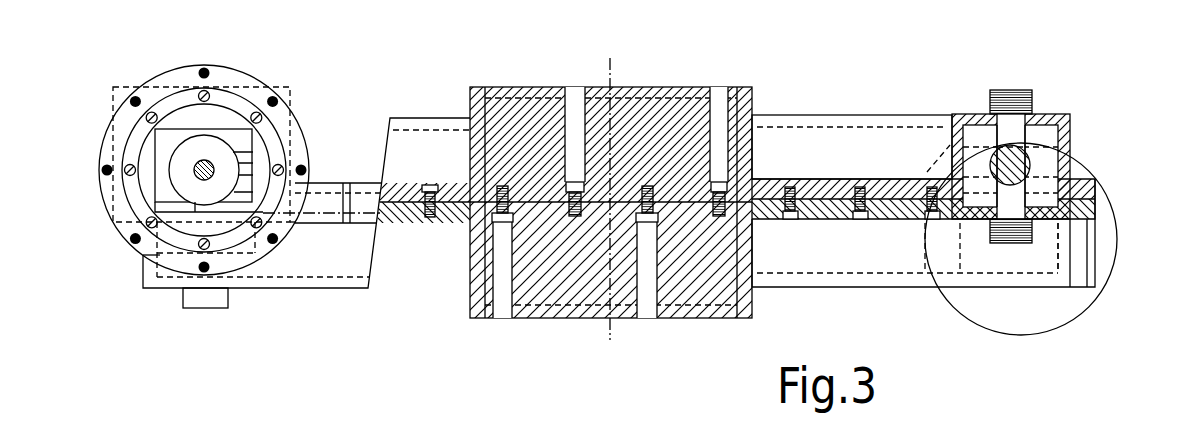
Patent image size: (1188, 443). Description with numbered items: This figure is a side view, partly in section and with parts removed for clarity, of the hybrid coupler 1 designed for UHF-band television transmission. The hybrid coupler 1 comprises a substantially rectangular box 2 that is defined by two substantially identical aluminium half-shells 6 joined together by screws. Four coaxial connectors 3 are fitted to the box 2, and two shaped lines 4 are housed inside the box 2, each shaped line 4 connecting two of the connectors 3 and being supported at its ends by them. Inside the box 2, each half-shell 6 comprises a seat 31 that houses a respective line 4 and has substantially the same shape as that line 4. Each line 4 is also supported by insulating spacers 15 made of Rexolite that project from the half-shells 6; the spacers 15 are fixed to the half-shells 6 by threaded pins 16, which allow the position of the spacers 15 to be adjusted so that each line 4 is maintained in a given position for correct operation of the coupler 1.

The hybrid coupler 1 is at (812, 42).
The box 2 is at (760, 100).
The connector 3 is at (293, 98).
The shaped line 4 is at (1032, 165).
The half-shell 6 is at (830, 145).
The insulating spacer 15 is at (1008, 140).
The threaded pin 16 is at (1003, 92).
The seat 31 is at (1042, 250).